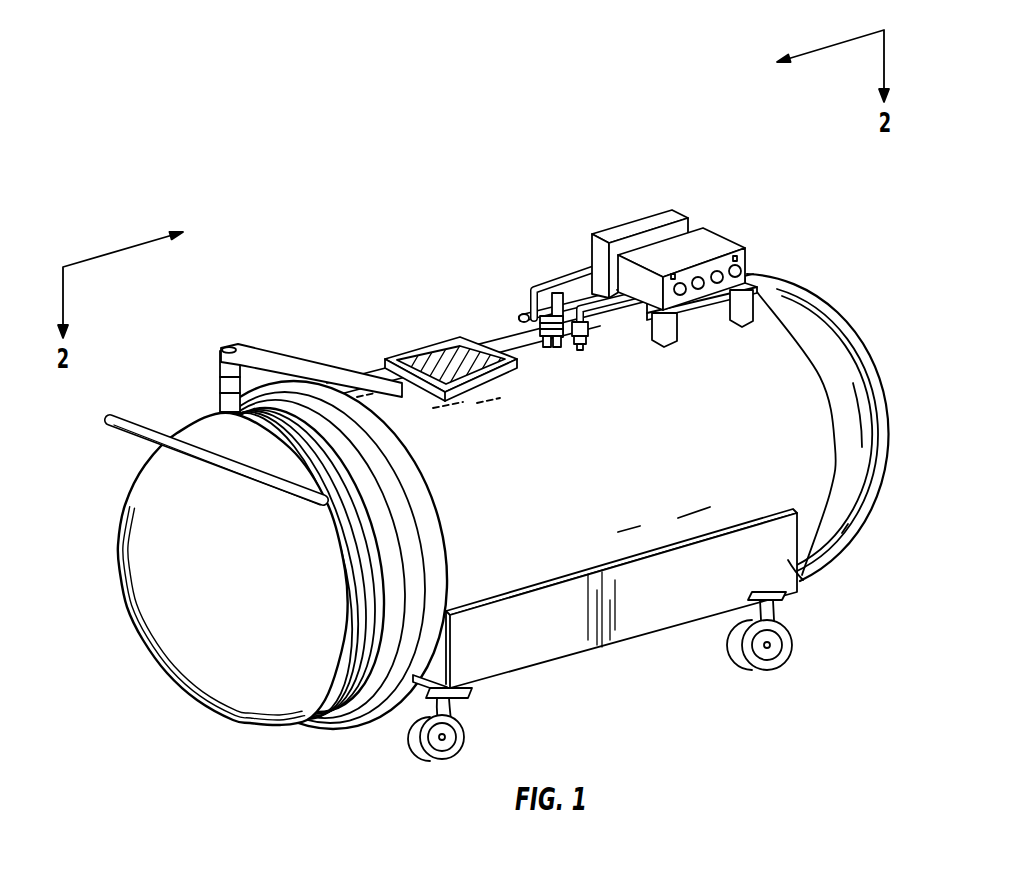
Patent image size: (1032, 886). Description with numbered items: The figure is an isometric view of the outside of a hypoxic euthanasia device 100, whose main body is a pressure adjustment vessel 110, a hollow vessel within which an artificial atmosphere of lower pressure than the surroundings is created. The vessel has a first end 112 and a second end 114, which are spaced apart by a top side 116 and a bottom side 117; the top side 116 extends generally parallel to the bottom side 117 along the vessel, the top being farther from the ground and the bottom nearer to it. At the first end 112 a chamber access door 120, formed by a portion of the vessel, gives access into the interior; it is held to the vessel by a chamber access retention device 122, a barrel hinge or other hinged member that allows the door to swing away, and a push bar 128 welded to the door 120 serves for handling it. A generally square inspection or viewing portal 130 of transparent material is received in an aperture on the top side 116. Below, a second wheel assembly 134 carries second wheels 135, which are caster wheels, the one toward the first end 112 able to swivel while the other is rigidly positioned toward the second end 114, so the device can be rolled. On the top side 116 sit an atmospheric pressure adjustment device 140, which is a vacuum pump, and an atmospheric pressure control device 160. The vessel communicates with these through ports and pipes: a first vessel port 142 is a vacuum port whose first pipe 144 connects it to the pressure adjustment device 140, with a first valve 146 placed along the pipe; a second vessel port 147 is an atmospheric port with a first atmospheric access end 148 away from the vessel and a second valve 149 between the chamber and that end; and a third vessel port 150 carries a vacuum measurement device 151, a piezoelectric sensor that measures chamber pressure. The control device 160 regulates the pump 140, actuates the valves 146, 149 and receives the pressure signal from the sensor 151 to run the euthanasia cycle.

The hypoxic euthanasia device 100 is at (474, 404).
The pressure adjustment vessel 110 is at (512, 332).
The first end 112 is at (203, 670).
The second end 114 is at (860, 343).
The top side 116 is at (368, 387).
The bottom side 117 is at (802, 581).
The chamber access door 120 is at (160, 530).
The chamber access retention device 122 is at (228, 367).
The push bar 128 is at (142, 418).
The inspection or viewing portal 130 is at (430, 359).
The second wheel assembly 134 is at (530, 650).
The second wheels 135 is at (421, 760).
The atmospheric pressure adjustment device 140 is at (642, 226).
The first vessel port 142 is at (553, 348).
The first pipe 144 is at (540, 288).
The first valve 146 is at (519, 318).
The second vessel port 147 is at (584, 350).
The first atmospheric access end 148 is at (561, 292).
The second valve 149 is at (524, 322).
The third vessel port 150 is at (590, 342).
The vacuum measurement device 151 is at (590, 328).
The atmospheric pressure control device 160 is at (714, 243).